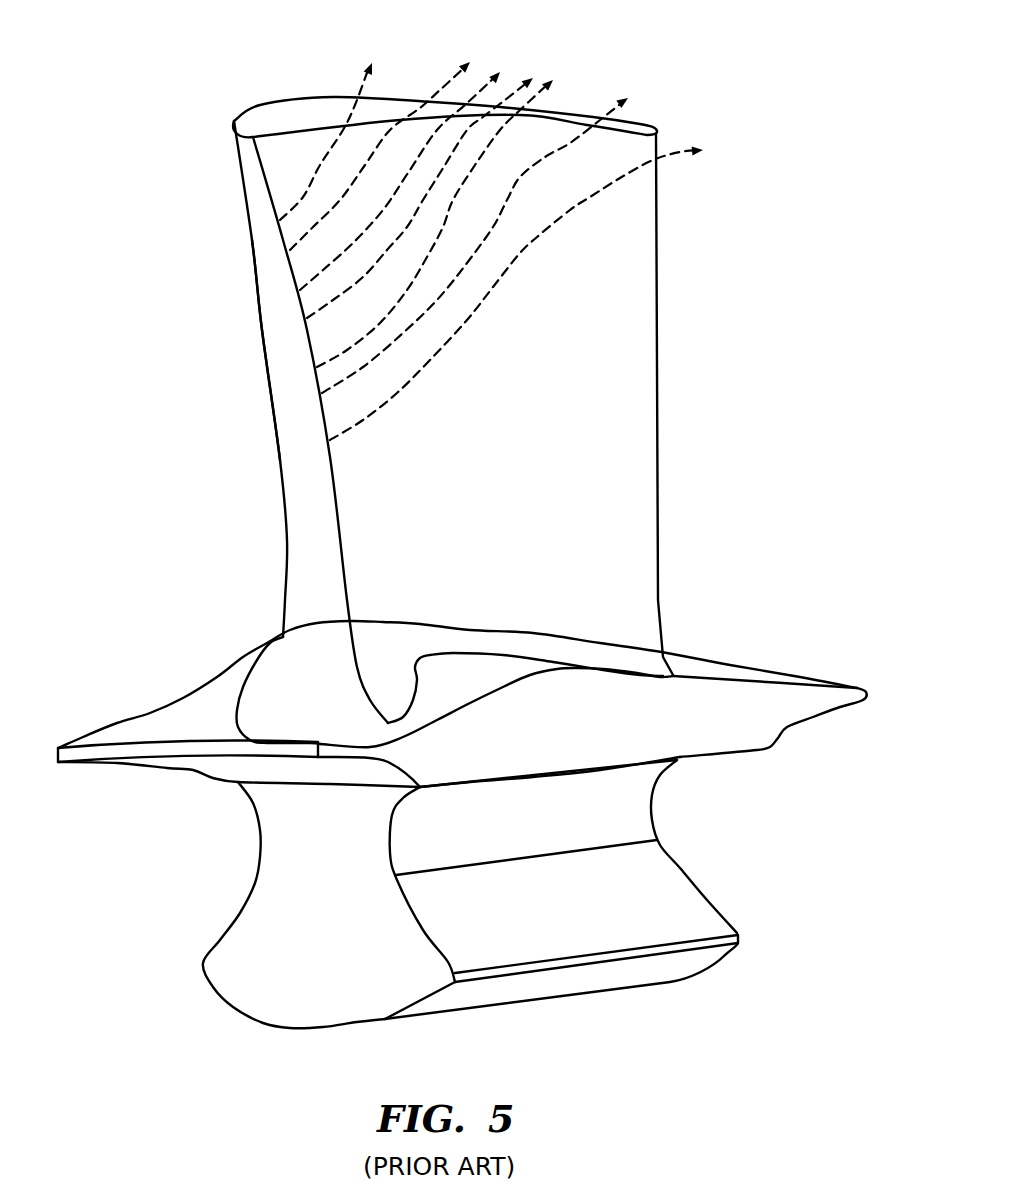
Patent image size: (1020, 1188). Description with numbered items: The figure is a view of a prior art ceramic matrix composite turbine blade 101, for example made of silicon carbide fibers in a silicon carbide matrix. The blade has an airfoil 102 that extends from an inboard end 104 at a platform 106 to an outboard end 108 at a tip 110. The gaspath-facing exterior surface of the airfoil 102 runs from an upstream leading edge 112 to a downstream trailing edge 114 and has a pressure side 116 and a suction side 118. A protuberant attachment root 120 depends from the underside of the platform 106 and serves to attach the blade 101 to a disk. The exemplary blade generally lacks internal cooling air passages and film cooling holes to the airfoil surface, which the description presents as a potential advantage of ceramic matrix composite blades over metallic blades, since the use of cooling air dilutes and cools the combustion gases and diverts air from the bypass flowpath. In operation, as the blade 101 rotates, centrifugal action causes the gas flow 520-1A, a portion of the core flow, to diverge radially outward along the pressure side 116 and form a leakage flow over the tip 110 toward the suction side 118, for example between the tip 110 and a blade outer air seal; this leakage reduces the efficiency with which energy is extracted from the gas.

The turbine blade 101 is at (131, 92).
The airfoil 102 is at (222, 427).
The inboard end 104 is at (497, 669).
The platform 106 is at (753, 701).
The outboard end 108 is at (285, 122).
The tip 110 is at (317, 113).
The leading edge 112 is at (317, 495).
The trailing edge 114 is at (657, 417).
The pressure side 116 is at (585, 365).
The suction side 118 is at (270, 385).
The attachment root 120 is at (278, 883).
The gas flow 520-1A is at (565, 138).